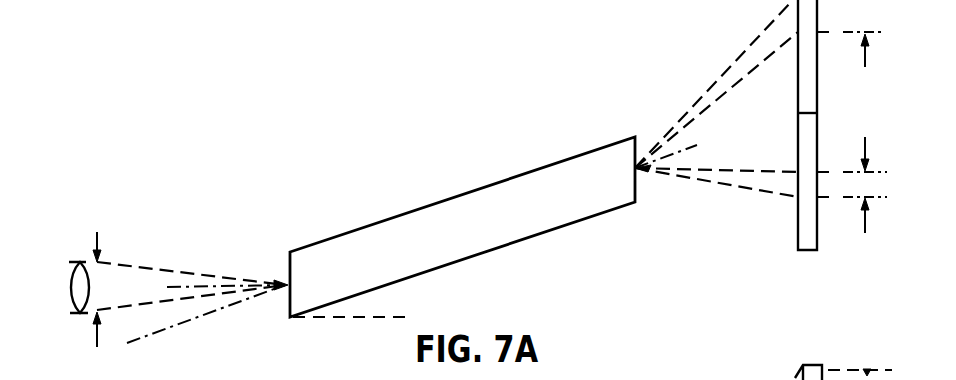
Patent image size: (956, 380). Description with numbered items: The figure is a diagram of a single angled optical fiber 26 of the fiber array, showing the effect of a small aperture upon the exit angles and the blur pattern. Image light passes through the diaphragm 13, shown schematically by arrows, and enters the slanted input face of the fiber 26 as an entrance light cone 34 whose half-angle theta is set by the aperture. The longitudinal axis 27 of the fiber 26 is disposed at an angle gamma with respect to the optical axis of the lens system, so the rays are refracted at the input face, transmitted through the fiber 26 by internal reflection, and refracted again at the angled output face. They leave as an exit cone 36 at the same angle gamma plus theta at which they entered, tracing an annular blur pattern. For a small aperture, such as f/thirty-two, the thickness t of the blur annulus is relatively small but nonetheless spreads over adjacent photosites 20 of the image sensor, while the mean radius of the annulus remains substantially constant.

The entrance light cone 34 is at (72, 278).
The diaphragm 13 is at (97, 240).
The longitudinal axis 27 is at (216, 312).
The optical fiber 26 is at (305, 267).
The exit cone 36 is at (713, 89).
The photosites 20 is at (820, 108).